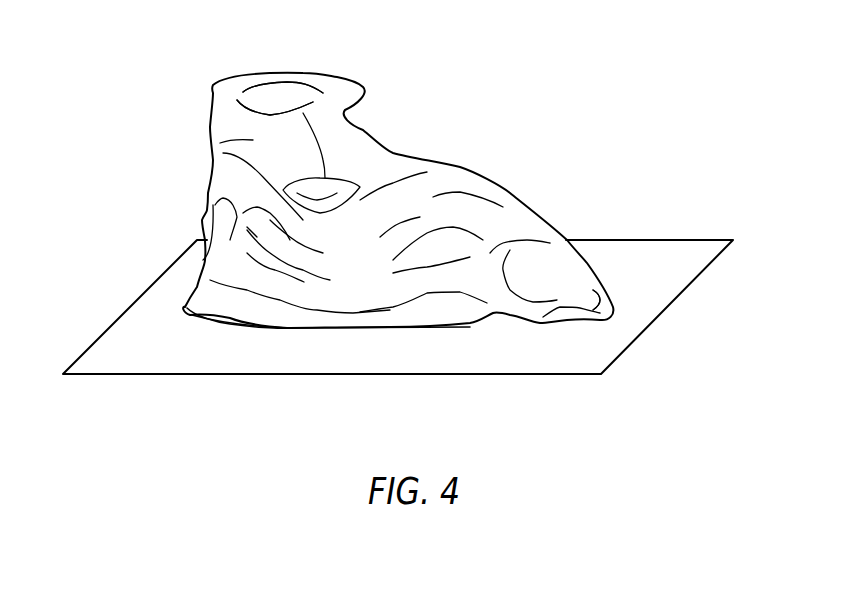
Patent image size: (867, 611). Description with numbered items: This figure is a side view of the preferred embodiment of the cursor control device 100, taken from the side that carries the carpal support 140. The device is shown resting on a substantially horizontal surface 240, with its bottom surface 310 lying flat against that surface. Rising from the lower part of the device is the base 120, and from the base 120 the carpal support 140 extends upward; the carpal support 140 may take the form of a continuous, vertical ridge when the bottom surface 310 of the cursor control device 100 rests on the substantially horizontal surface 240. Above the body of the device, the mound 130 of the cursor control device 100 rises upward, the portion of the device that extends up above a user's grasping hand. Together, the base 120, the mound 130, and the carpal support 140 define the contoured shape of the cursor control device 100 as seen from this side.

The cursor control device 100 is at (579, 421).
The base 120 is at (600, 310).
The mound 130 is at (230, 130).
The carpal support 140 is at (480, 175).
The substantially horizontal surface 240 is at (128, 340).
The bottom surface 310 is at (280, 328).